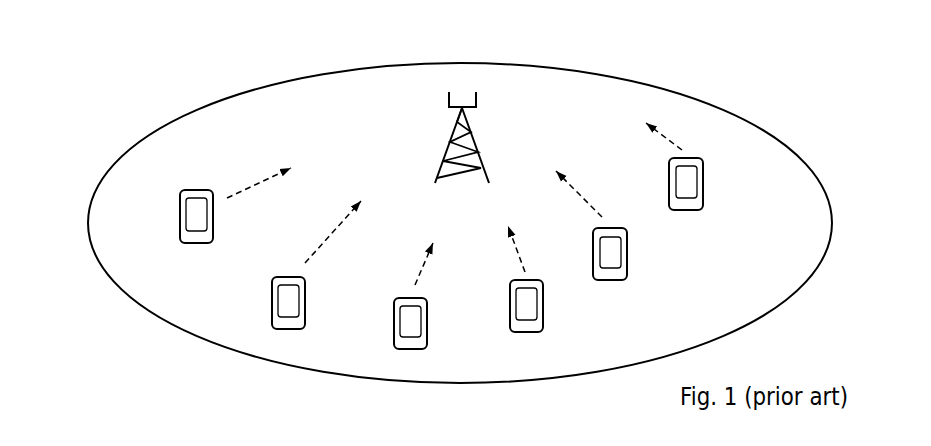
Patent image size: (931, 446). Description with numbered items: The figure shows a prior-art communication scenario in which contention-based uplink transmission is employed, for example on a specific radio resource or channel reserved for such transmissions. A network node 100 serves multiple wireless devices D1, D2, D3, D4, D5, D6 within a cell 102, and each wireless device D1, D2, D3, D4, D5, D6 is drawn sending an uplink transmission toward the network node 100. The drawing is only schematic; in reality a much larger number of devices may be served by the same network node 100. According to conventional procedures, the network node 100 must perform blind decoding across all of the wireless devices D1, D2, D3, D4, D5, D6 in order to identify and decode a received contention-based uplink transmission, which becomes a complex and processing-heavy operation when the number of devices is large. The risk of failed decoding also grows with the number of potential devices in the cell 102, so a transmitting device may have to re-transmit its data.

The network node 100 is at (490, 128).
The cell 102 is at (676, 86).
The wireless device D1 is at (213, 228).
The wireless device D2 is at (305, 313).
The wireless device D3 is at (427, 333).
The wireless device D4 is at (543, 316).
The wireless device D5 is at (627, 265).
The wireless device D6 is at (703, 196).